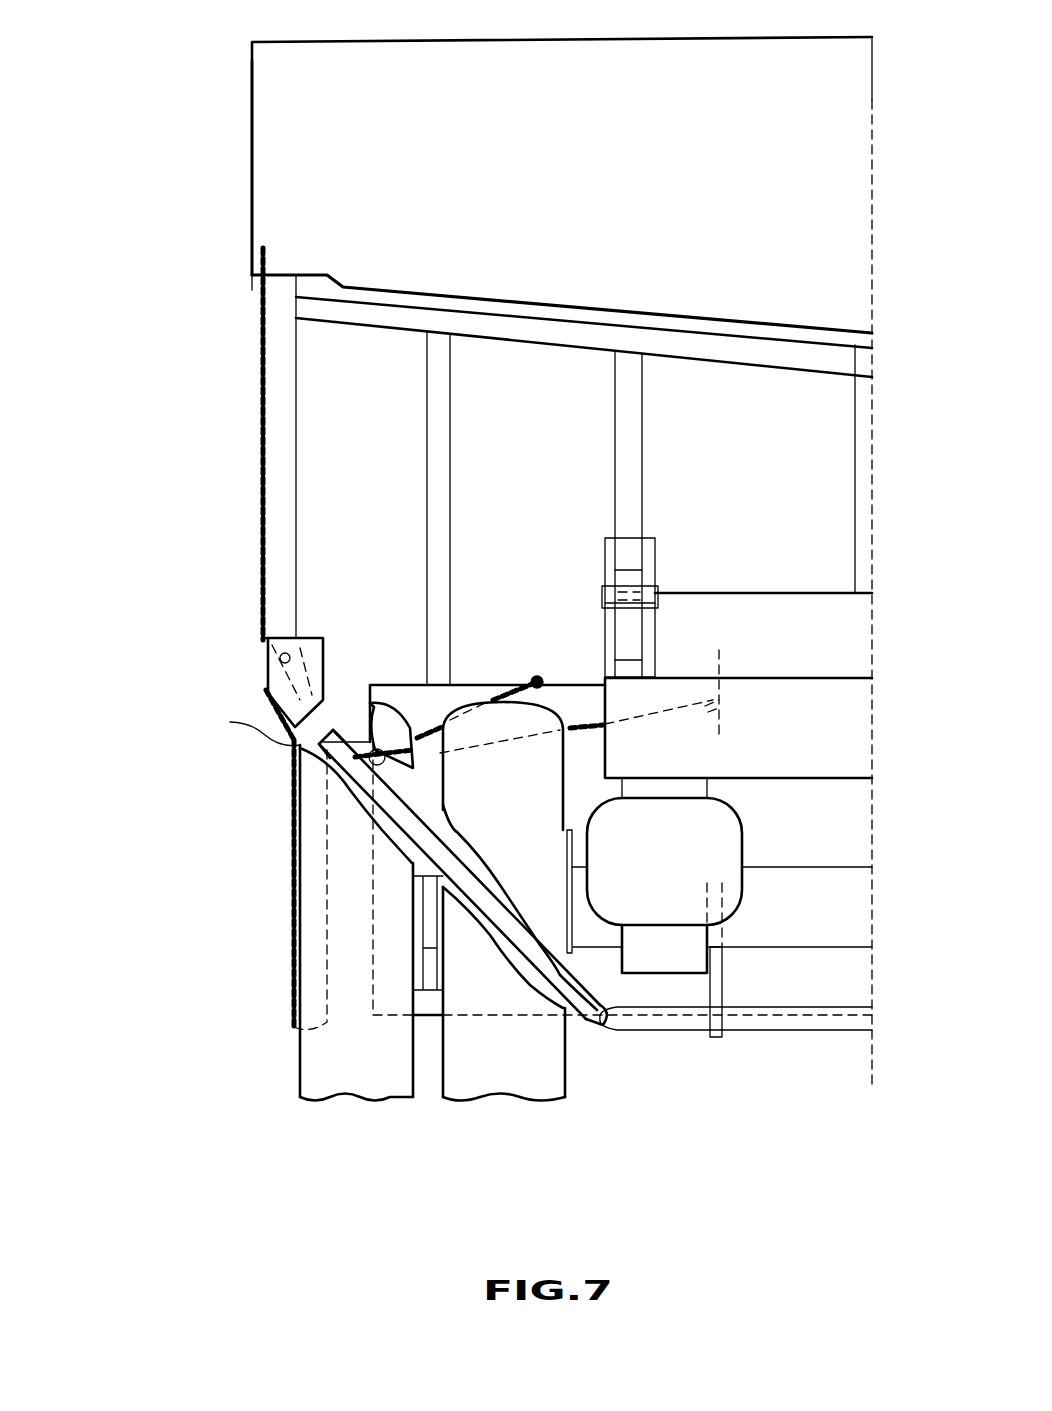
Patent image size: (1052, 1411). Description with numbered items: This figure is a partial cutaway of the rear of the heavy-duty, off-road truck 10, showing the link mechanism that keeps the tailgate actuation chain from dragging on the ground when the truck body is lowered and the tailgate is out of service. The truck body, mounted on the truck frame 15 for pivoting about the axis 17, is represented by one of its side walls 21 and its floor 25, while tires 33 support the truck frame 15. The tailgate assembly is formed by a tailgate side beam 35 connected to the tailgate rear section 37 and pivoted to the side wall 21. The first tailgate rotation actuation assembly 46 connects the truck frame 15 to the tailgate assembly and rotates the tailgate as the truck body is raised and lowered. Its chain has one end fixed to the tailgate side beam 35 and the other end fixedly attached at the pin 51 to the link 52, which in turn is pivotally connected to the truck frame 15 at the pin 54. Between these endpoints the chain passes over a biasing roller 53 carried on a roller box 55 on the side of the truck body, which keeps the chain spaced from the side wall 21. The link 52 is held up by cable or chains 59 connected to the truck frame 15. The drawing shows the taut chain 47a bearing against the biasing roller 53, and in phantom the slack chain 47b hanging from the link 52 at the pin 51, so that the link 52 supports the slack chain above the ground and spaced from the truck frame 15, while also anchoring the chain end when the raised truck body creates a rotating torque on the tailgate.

The heavy-duty, off-road truck 10 is at (165, 291).
The truck frame 15 is at (398, 690).
The axis 17 is at (602, 590).
The side walls 21 is at (296, 510).
The floor 25 is at (730, 542).
The tires 33 is at (380, 1100).
The tailgate side beam 35 is at (250, 183).
The tailgate rear section 37 is at (612, 254).
The first tailgate rotation actuation assembly 46 is at (238, 673).
The taut chain 47a is at (262, 370).
The slack chain 47b is at (296, 950).
The pin 51 is at (325, 747).
The link 52 is at (388, 814).
The biasing roller 53 is at (263, 648).
The pin 54 is at (603, 1024).
The roller box 55 is at (280, 622).
The chains 59 is at (572, 728).